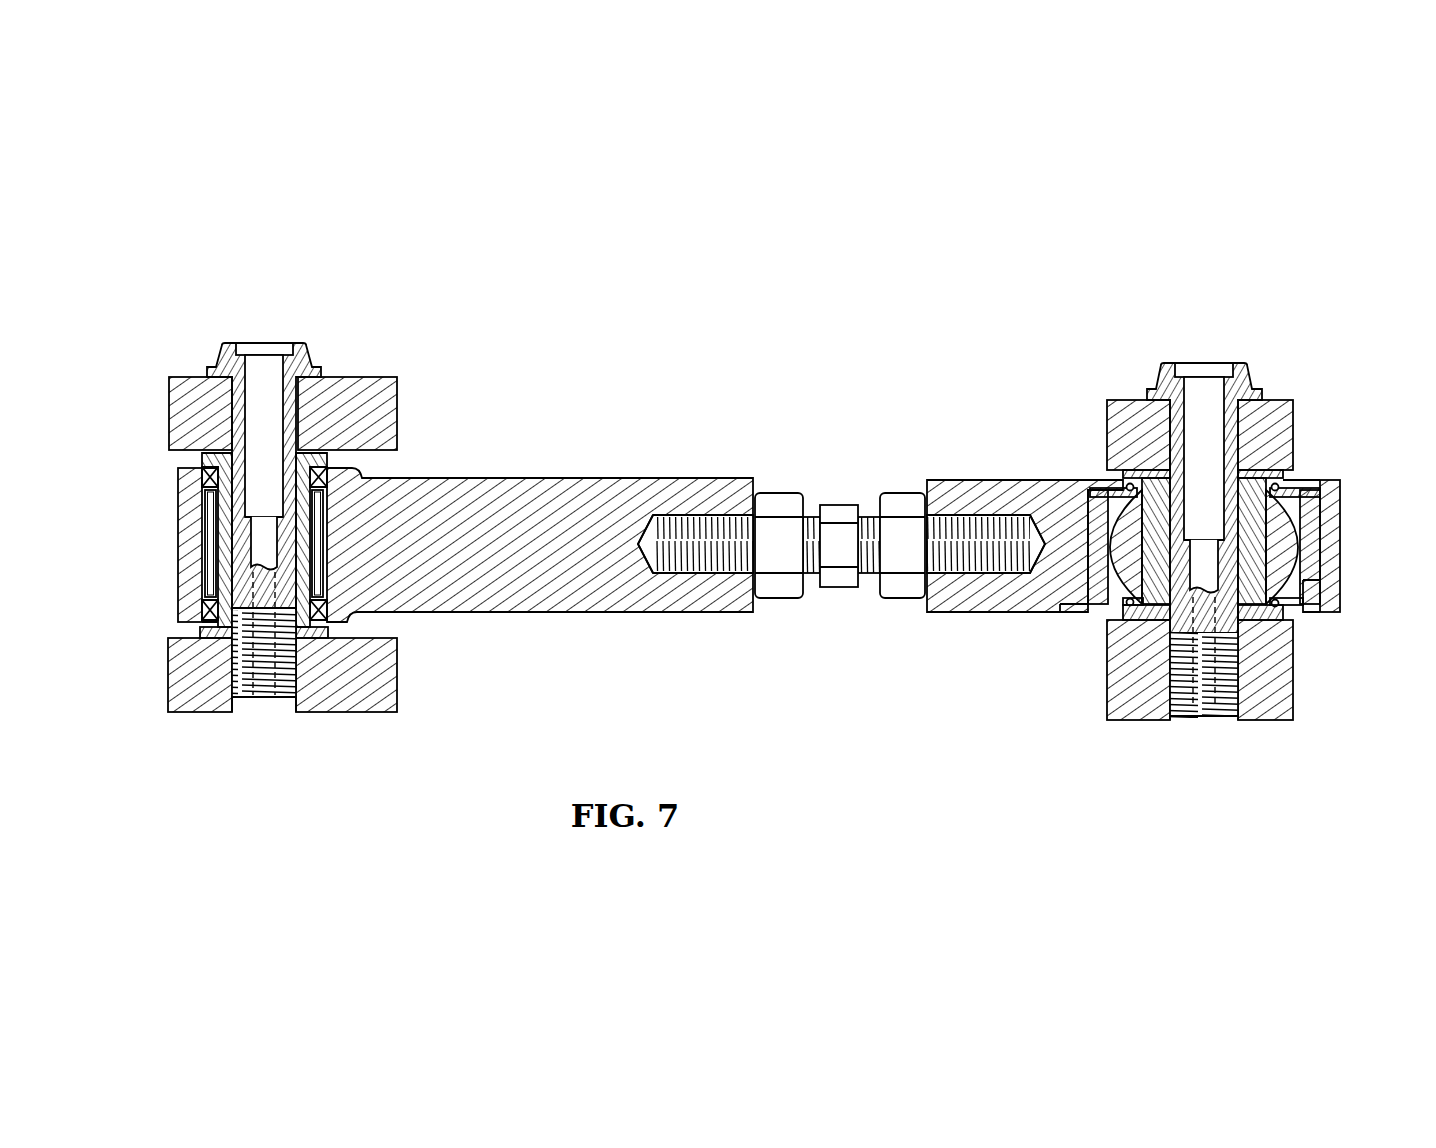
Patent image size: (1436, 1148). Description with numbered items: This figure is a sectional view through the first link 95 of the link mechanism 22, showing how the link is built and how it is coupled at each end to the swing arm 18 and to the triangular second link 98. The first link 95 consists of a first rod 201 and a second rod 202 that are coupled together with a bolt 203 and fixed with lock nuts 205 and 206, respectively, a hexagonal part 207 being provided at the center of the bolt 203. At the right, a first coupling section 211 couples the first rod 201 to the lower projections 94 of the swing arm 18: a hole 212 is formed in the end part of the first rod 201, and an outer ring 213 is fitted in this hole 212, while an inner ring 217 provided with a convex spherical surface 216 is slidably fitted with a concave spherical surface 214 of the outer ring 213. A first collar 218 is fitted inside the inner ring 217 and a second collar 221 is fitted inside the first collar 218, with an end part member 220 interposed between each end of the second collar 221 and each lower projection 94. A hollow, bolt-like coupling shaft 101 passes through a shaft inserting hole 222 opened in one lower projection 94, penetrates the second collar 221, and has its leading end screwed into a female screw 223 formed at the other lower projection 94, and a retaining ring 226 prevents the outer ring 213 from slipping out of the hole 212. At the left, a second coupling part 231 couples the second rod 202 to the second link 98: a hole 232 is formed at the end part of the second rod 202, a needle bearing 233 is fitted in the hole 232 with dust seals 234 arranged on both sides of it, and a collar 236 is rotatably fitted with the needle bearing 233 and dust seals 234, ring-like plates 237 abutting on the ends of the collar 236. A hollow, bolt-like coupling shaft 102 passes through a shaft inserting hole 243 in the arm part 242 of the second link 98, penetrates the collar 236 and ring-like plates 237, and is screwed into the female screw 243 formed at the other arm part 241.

The swing arm 18 is at (1298, 422).
The link mechanism 22 is at (885, 272).
The lower projection 94 is at (1270, 410).
The first link 95 is at (653, 476).
The second link 98 is at (172, 375).
The hollow coupling shaft 101 is at (1206, 362).
The hollow coupling shaft 102 is at (284, 340).
The first rod 201 is at (962, 485).
The second rod 202 is at (520, 498).
The bolt 203 is at (828, 495).
The lock nut 205 is at (902, 500).
The lock nut 206 is at (779, 497).
The hexagonal part 207 is at (846, 500).
The first coupling section 211 is at (1157, 345).
The hole 212 is at (1062, 605).
The outer ring 213 is at (1095, 525).
The concave spherical surface 214 is at (1127, 505).
The convex spherical surface 216 is at (1092, 598).
The inner ring 217 is at (1320, 497).
The first collar 218 is at (1340, 541).
The end part member 220 is at (1285, 612).
The second collar 221 is at (1320, 582).
The shaft inserting hole 222 is at (1230, 420).
The female screw 223 is at (1186, 680).
The retaining ring 226 is at (1302, 486).
The second coupling part 231 is at (302, 323).
The hole 232 is at (302, 476).
The needle bearing 233 is at (308, 532).
The dust seal 234 is at (203, 473).
The collar 236 is at (222, 540).
The ring-like plate 237 is at (330, 633).
The arm part 241 is at (346, 705).
The arm part 242 is at (350, 386).
The shaft inserting hole 243 is at (242, 410).